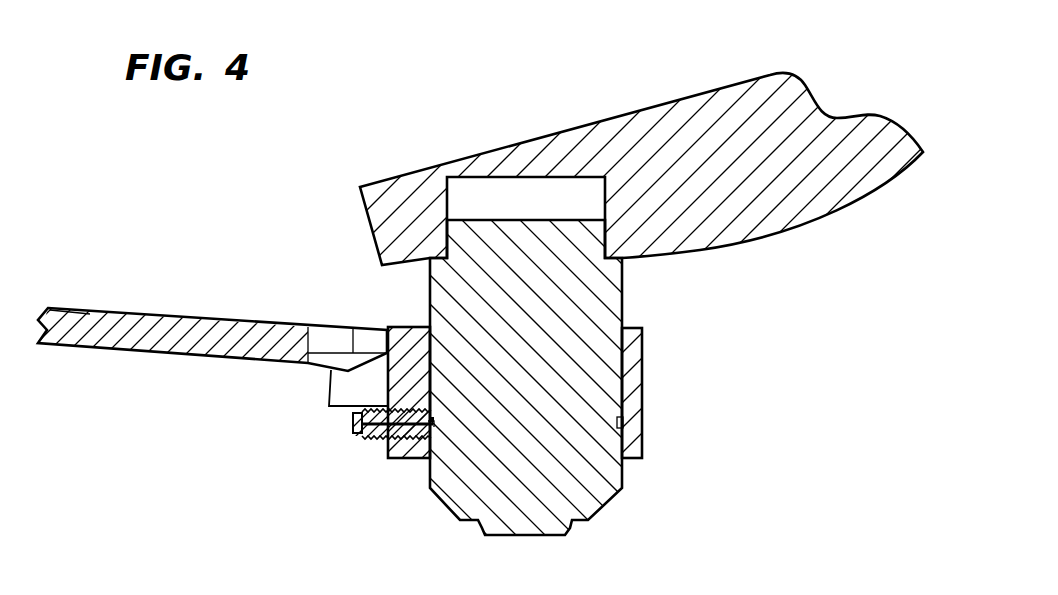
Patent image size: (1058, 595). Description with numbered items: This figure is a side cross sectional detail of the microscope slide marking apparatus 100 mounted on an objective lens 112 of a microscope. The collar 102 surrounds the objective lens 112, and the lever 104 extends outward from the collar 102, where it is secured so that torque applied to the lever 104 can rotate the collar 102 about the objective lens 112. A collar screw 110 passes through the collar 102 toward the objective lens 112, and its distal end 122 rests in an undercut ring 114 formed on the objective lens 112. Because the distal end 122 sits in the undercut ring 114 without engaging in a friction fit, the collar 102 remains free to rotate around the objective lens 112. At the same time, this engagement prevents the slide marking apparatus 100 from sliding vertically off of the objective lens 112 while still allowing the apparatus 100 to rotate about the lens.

The microscope slide marking apparatus 100 is at (266, 292).
The collar 102 is at (403, 327).
The lever 104 is at (137, 310).
The collar screw 110 is at (355, 424).
The objective lens 112 is at (623, 293).
The undercut ring 114 is at (623, 422).
The distal end 122 is at (433, 426).